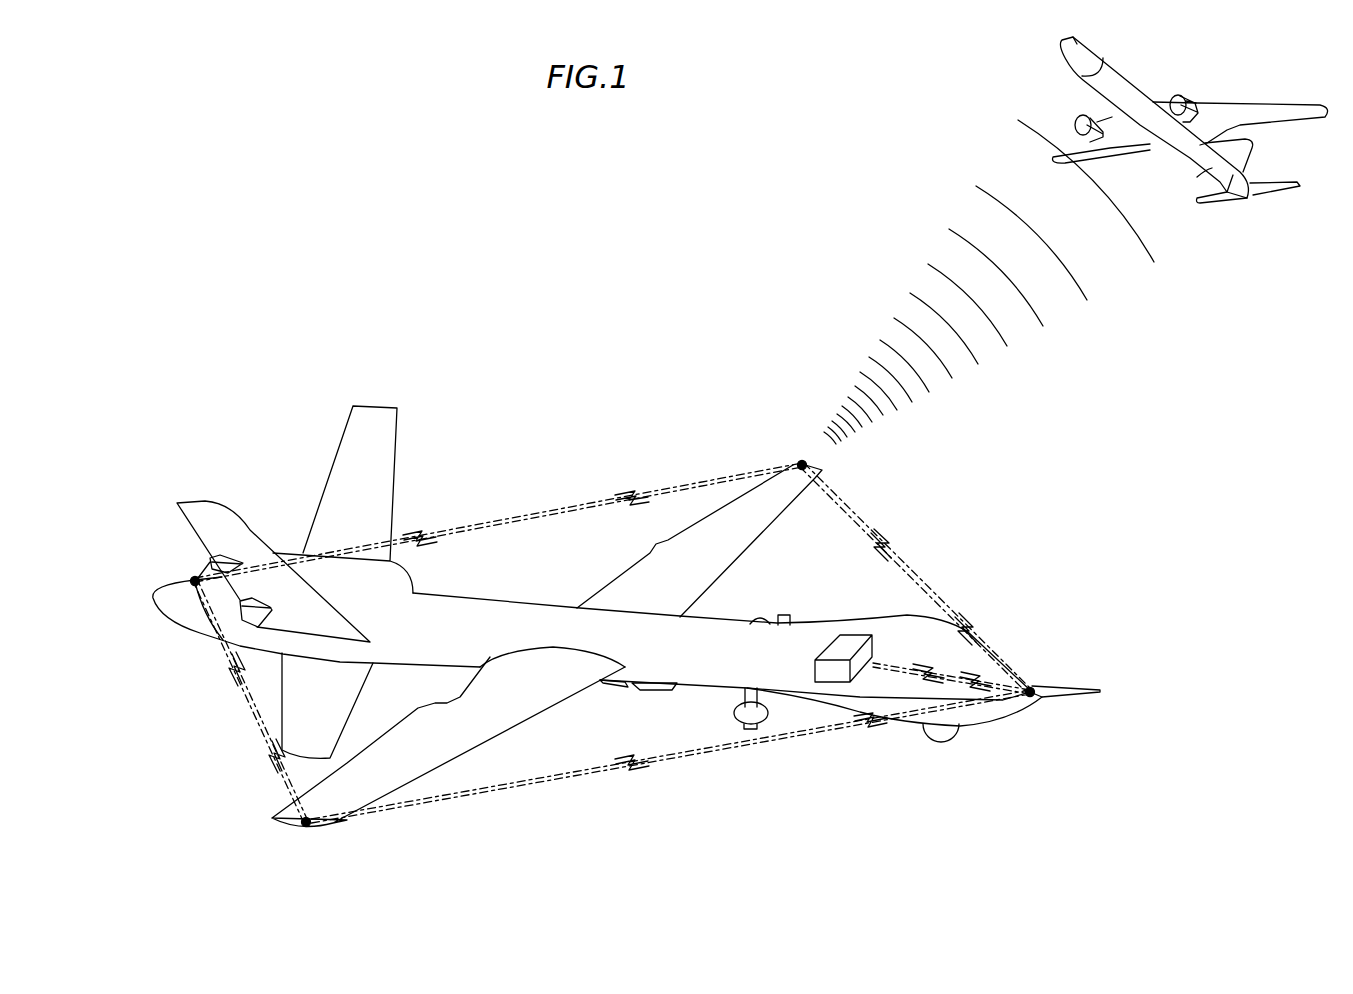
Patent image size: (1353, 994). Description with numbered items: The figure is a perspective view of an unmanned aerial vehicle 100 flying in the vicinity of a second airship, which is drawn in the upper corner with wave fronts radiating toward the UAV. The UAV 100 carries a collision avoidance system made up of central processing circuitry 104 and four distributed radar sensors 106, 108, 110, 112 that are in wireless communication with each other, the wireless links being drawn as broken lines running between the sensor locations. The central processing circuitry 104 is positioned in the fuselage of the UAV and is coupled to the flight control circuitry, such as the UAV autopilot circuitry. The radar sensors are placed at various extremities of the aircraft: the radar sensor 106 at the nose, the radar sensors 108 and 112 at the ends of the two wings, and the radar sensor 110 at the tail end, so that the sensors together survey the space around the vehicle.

The unmanned aerial vehicle 100 is at (343, 423).
The central processing circuitry 104 is at (850, 650).
The radar sensor 106 is at (1030, 690).
The radar sensor 108 is at (802, 465).
The radar sensor 110 is at (195, 582).
The radar sensor 112 is at (306, 820).